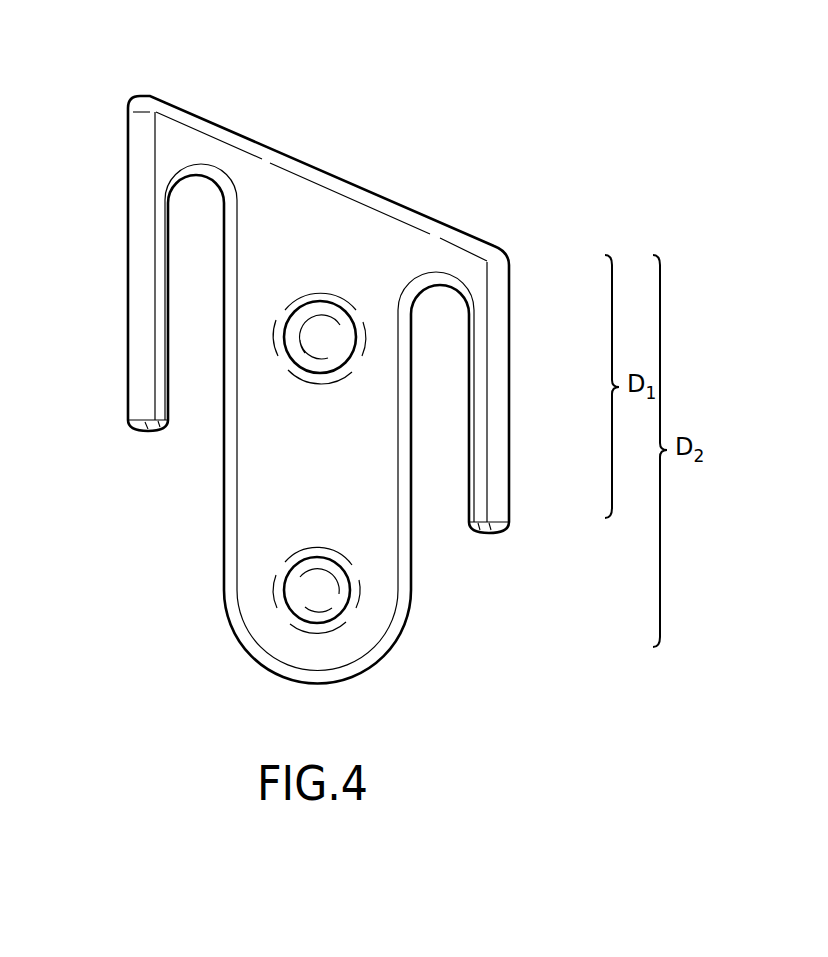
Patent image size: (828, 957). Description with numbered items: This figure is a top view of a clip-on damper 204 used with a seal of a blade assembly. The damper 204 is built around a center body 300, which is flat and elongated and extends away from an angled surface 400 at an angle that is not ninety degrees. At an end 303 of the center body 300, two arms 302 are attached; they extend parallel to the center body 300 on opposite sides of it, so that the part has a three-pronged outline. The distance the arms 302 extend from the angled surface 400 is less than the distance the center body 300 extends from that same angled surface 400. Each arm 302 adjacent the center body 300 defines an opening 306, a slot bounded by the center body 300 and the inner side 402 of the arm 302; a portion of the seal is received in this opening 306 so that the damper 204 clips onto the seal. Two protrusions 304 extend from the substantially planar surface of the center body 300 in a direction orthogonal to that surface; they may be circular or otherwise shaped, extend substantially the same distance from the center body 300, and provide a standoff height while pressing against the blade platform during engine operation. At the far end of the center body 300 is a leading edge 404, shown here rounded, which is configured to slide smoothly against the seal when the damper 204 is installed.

The damper 204 is at (468, 93).
The center body 300 is at (256, 515).
The arms 302 is at (140, 363).
The end 303 is at (248, 170).
The protrusions 304 is at (333, 330).
The opening 306 is at (195, 225).
The angled surface 400 is at (305, 160).
The inner side of arm 402 is at (168, 258).
The leading edge 404 is at (355, 668).